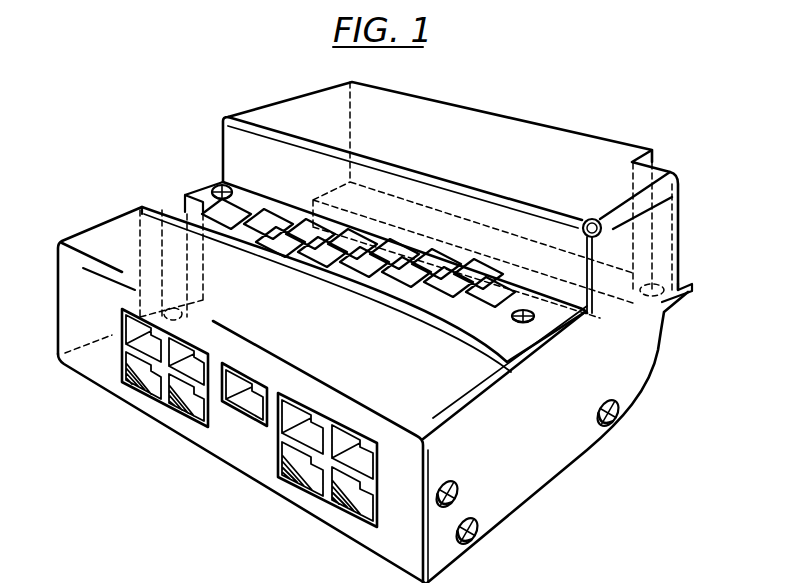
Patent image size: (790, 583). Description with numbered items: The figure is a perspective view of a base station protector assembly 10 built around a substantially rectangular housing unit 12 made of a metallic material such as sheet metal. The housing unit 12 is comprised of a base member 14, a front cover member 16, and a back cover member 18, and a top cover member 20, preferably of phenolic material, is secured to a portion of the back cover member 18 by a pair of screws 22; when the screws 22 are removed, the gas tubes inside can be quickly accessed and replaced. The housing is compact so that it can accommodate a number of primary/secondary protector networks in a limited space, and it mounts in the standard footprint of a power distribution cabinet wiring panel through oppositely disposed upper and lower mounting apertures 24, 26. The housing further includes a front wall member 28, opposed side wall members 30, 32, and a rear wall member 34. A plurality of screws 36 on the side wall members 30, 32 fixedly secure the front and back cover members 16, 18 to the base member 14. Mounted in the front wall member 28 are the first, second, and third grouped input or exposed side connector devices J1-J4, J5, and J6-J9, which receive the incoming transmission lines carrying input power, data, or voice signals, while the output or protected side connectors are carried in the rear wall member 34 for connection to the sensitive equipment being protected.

The base station protector assembly 10 is at (238, 93).
The housing unit 12 is at (547, 487).
The base member 14 is at (110, 388).
The front cover member 16 is at (100, 348).
The back cover member 18 is at (579, 161).
The top cover member 20 is at (492, 336).
The screws 22 is at (219, 184).
The upper mounting aperture 24 is at (175, 200).
The lower mounting aperture 26 is at (680, 277).
The front wall member 28 is at (273, 482).
The side wall member 30 is at (125, 228).
The side wall member 32 is at (540, 437).
The rear wall member 34 is at (497, 112).
The screws 36 is at (623, 402).
The third grouped input connector devices J6-J9 is at (160, 400).
The second grouped input connector device J5 is at (240, 413).
The first grouped input connector devices J1-J4 is at (323, 497).